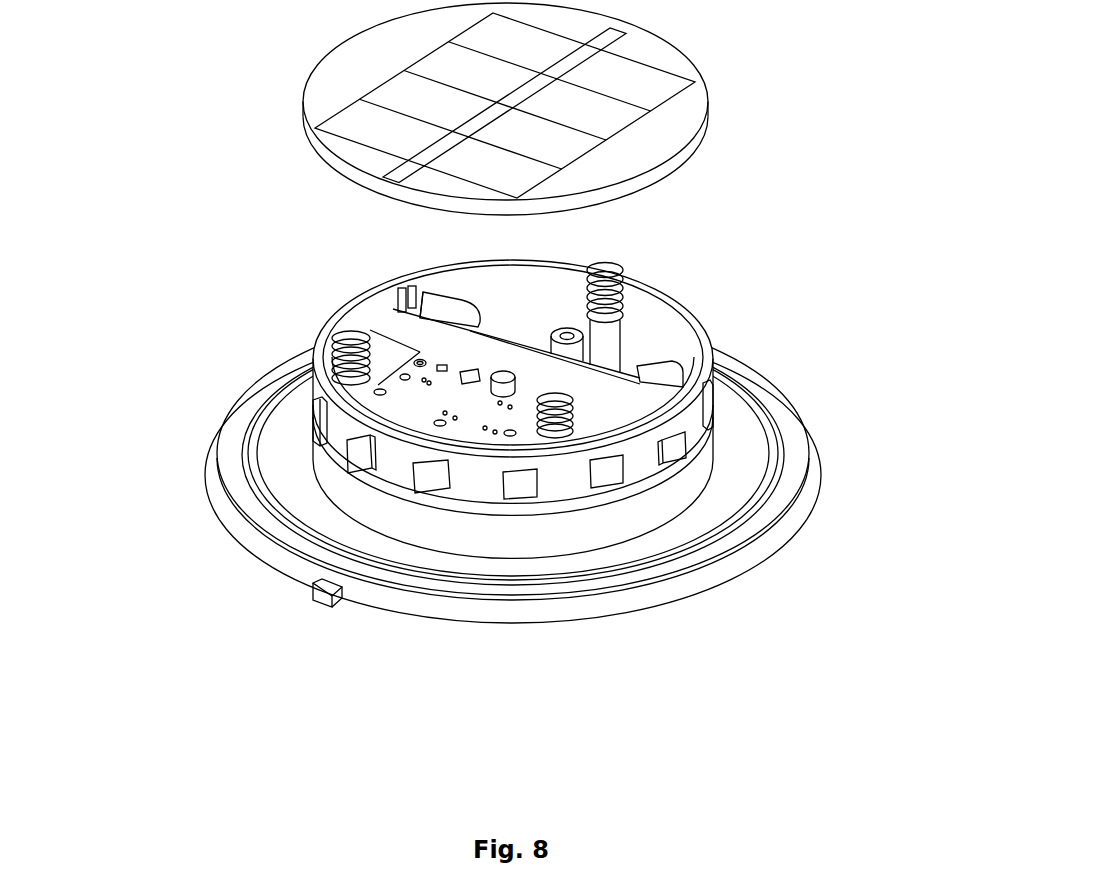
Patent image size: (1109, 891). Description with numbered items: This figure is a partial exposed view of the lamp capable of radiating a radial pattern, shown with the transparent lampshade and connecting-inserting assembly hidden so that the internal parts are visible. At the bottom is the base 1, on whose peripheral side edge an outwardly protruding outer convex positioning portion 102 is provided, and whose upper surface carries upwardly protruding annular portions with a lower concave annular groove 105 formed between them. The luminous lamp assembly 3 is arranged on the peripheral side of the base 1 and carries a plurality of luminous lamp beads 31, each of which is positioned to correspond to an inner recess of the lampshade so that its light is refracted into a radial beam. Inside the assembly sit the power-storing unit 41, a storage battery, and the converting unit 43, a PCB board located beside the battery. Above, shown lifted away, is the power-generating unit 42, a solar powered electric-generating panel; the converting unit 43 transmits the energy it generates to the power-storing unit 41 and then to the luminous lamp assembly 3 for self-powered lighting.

The base 1 is at (283, 455).
The luminous lamp assembly 3 is at (645, 460).
The luminous lamp beads 31 is at (520, 487).
The power-storing unit 41 is at (580, 382).
The power-generating unit 42 is at (673, 118).
The converting unit 43 is at (417, 400).
The outer convex positioning portion 102 is at (326, 597).
The lower concave annular groove 105 is at (235, 482).